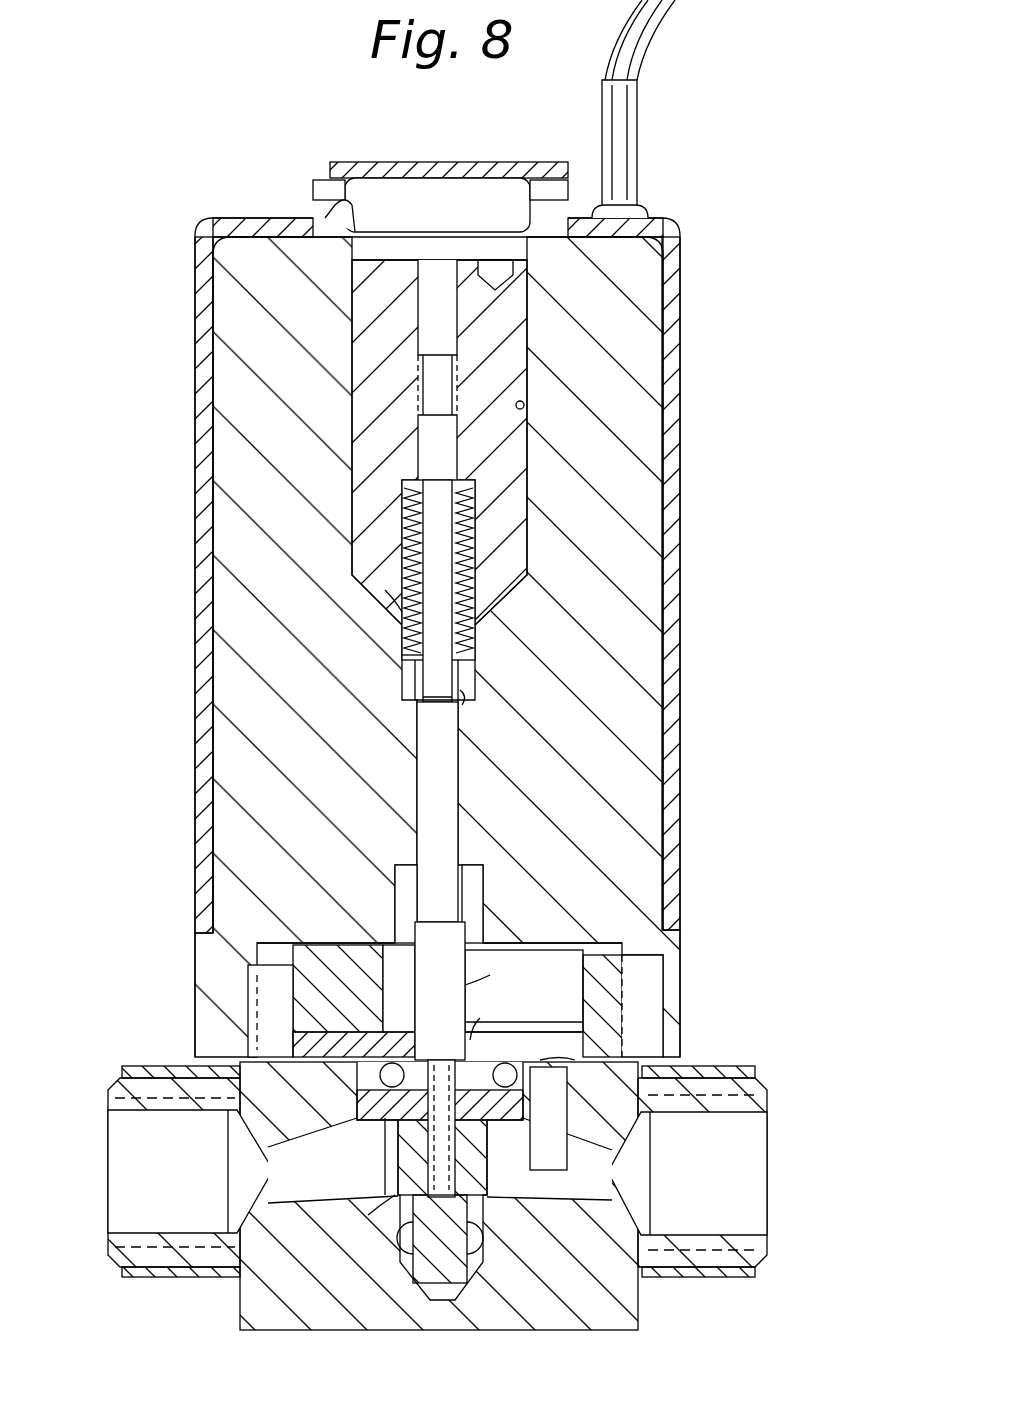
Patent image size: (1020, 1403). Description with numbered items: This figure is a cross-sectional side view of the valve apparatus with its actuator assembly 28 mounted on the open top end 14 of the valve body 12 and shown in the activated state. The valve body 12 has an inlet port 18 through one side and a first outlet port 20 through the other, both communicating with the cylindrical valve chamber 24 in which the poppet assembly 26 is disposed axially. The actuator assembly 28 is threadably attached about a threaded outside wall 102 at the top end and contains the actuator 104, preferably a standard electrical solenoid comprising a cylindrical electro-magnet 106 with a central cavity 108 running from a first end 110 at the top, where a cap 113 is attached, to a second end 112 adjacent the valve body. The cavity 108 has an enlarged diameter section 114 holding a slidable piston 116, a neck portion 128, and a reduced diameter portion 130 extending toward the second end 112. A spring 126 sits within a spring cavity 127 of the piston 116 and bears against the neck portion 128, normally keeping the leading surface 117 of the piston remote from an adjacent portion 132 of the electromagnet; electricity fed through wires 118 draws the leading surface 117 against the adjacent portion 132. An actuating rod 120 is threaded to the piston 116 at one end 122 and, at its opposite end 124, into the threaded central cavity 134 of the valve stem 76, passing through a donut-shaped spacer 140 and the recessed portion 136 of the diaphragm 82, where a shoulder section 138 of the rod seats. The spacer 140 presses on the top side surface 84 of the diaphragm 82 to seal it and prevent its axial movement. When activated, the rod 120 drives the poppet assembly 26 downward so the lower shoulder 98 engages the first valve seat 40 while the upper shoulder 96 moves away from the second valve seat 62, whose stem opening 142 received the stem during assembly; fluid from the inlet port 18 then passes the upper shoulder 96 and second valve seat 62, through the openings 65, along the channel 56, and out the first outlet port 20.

The valve body 12 is at (575, 1279).
The open top end 14 is at (307, 1060).
The inlet port 18 is at (128, 1172).
The first outlet port 20 is at (735, 1166).
The valve chamber 24 is at (388, 1155).
The poppet assembly 26 is at (565, 1165).
The actuator assembly 28 is at (680, 537).
The first valve seat 40 is at (480, 1185).
The channel 56 is at (557, 1169).
The second valve seat 62 is at (512, 1095).
The openings 65 is at (420, 1060).
The valve stem 76 is at (452, 1241).
The diaphragm 82 is at (562, 1056).
The top side surface 84 is at (342, 1030).
The upper shoulder 96 is at (390, 1152).
The lower shoulder 98 is at (368, 1215).
The outside wall 102 is at (628, 1000).
The actuator 104 is at (590, 817).
The electro-magnet 106 is at (557, 726).
The cavity 108 is at (418, 688).
The first end 110 is at (335, 220).
The second end 112 is at (575, 945).
The cap 113 is at (418, 164).
The enlarged diameter section 114 is at (520, 409).
The piston 116 is at (389, 414).
The leading surface 117 is at (385, 590).
The wires 118 is at (635, 42).
The actuating rod 120 is at (452, 812).
The one end 122 is at (437, 462).
The opposite end 124 is at (480, 1242).
The spring 126 is at (400, 626).
The spring cavity 127 is at (476, 540).
The neck portion 128 is at (470, 690).
The reduced diameter portion 130 is at (463, 702).
The adjacent portion 132 is at (400, 600).
The central cavity 134 is at (442, 1157).
The recessed portion 136 is at (499, 1016).
The shoulder section 138 is at (497, 974).
The spacer 140 is at (565, 1007).
The stem opening 142 is at (458, 1113).